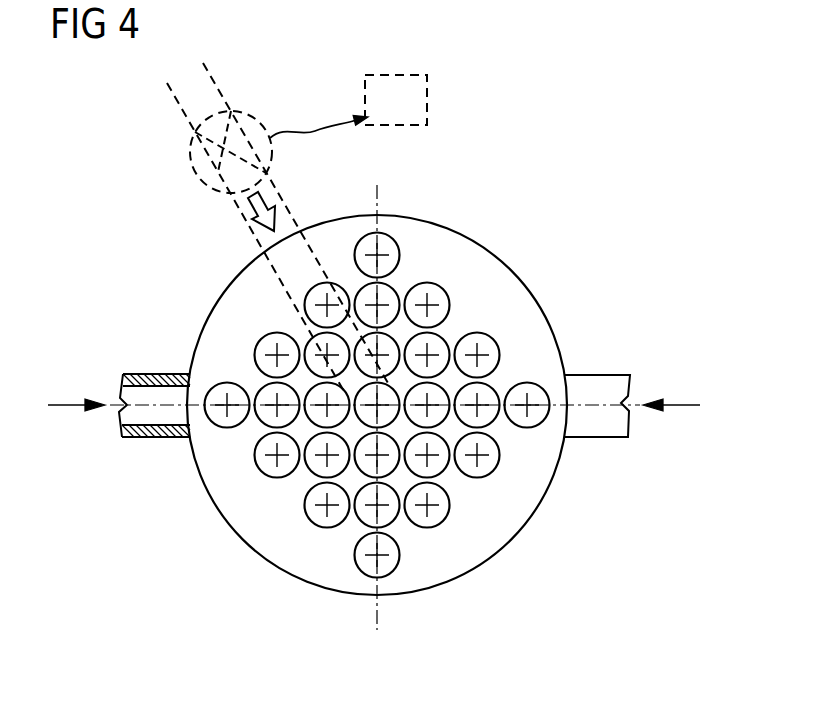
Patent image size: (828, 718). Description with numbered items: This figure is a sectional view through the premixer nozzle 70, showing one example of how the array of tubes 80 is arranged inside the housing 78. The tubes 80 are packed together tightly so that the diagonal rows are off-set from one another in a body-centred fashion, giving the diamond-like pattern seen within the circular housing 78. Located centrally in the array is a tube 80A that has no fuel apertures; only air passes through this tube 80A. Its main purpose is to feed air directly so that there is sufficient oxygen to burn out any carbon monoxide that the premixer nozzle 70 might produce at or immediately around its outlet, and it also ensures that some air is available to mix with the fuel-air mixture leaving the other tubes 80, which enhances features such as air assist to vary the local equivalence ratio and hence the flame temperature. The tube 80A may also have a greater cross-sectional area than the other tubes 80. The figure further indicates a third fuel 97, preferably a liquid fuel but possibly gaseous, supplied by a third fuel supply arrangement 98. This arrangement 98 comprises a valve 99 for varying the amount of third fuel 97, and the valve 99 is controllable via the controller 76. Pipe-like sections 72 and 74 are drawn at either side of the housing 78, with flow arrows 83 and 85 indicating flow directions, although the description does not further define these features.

The premixer nozzle 70 is at (528, 138).
The outlet pipe 72 is at (597, 375).
The inlet pipe 74 is at (158, 374).
The controller 76 is at (428, 93).
The housing 78 is at (532, 290).
The tubes 80 is at (447, 283).
The tube 80A is at (388, 424).
The flow direction 83 is at (683, 405).
The flow direction 85 is at (63, 405).
The third fuel 97 is at (272, 198).
The third fuel supply arrangement 98 is at (215, 84).
The valve 99 is at (194, 173).